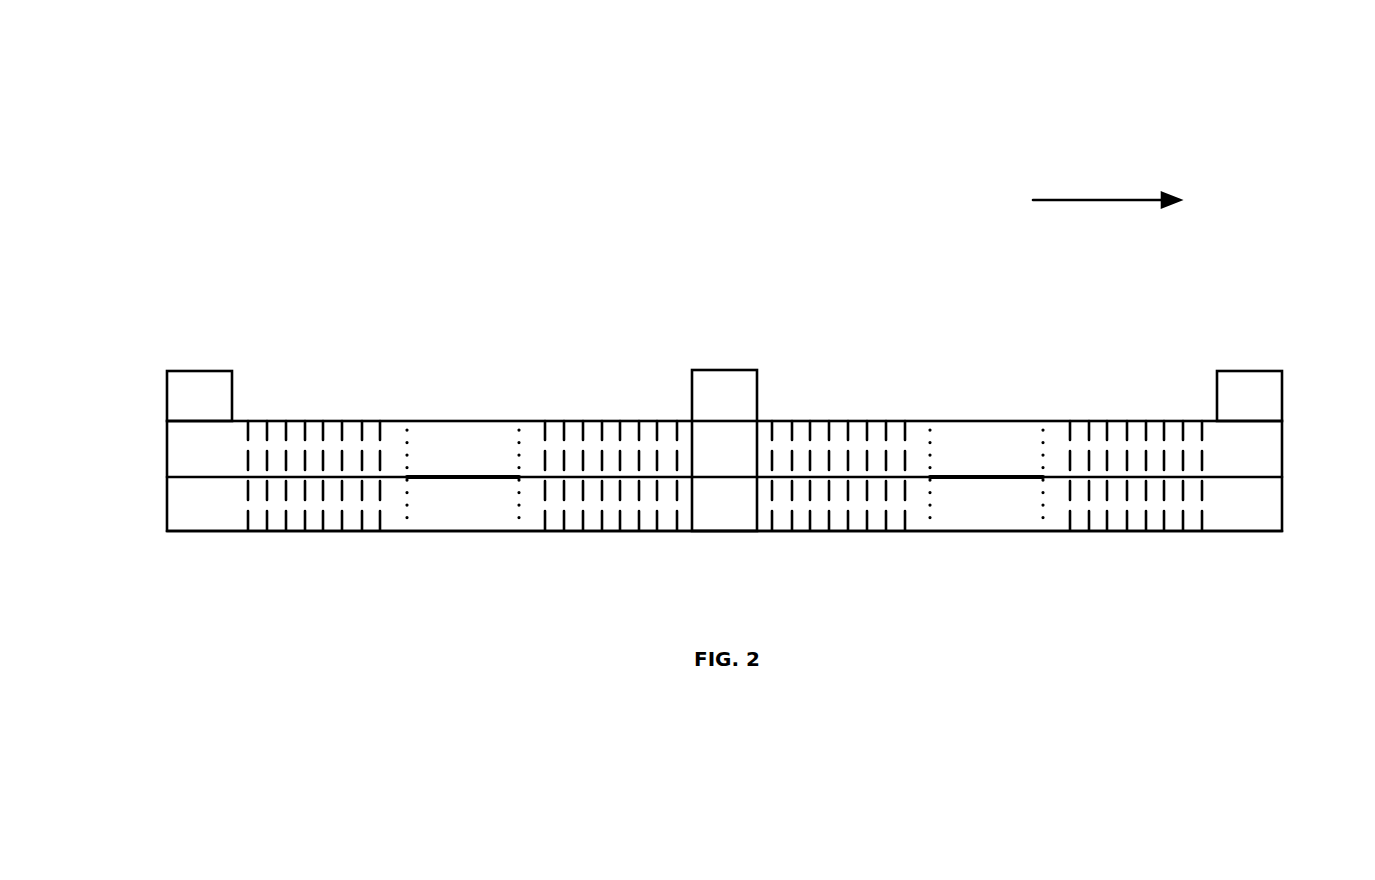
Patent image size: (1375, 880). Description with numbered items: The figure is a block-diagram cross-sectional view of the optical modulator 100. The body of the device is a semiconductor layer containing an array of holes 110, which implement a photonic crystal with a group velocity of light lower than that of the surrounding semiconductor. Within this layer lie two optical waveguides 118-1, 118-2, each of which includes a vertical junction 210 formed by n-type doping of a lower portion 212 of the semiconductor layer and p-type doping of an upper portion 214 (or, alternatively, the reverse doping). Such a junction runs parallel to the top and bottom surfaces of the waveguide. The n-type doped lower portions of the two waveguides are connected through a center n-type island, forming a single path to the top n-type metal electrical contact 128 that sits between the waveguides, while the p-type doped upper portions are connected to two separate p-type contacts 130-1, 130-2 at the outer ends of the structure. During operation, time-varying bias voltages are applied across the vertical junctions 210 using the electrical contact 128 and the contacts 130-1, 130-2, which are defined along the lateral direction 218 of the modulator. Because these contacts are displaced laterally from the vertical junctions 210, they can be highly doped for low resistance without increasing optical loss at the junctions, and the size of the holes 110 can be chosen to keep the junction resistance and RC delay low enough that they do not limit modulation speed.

The optical modulator 100 is at (367, 123).
The holes 110 is at (299, 501).
The optical waveguide 118-1 is at (410, 403).
The optical waveguide 118-2 is at (929, 403).
The electrical contact 128 is at (730, 407).
The contact 130-1 is at (205, 393).
The contact 130-2 is at (1247, 397).
The vertical junctions 210 is at (460, 477).
The lower portion 212 is at (1248, 500).
The upper portion 214 is at (223, 440).
The lateral direction 218 is at (1088, 200).